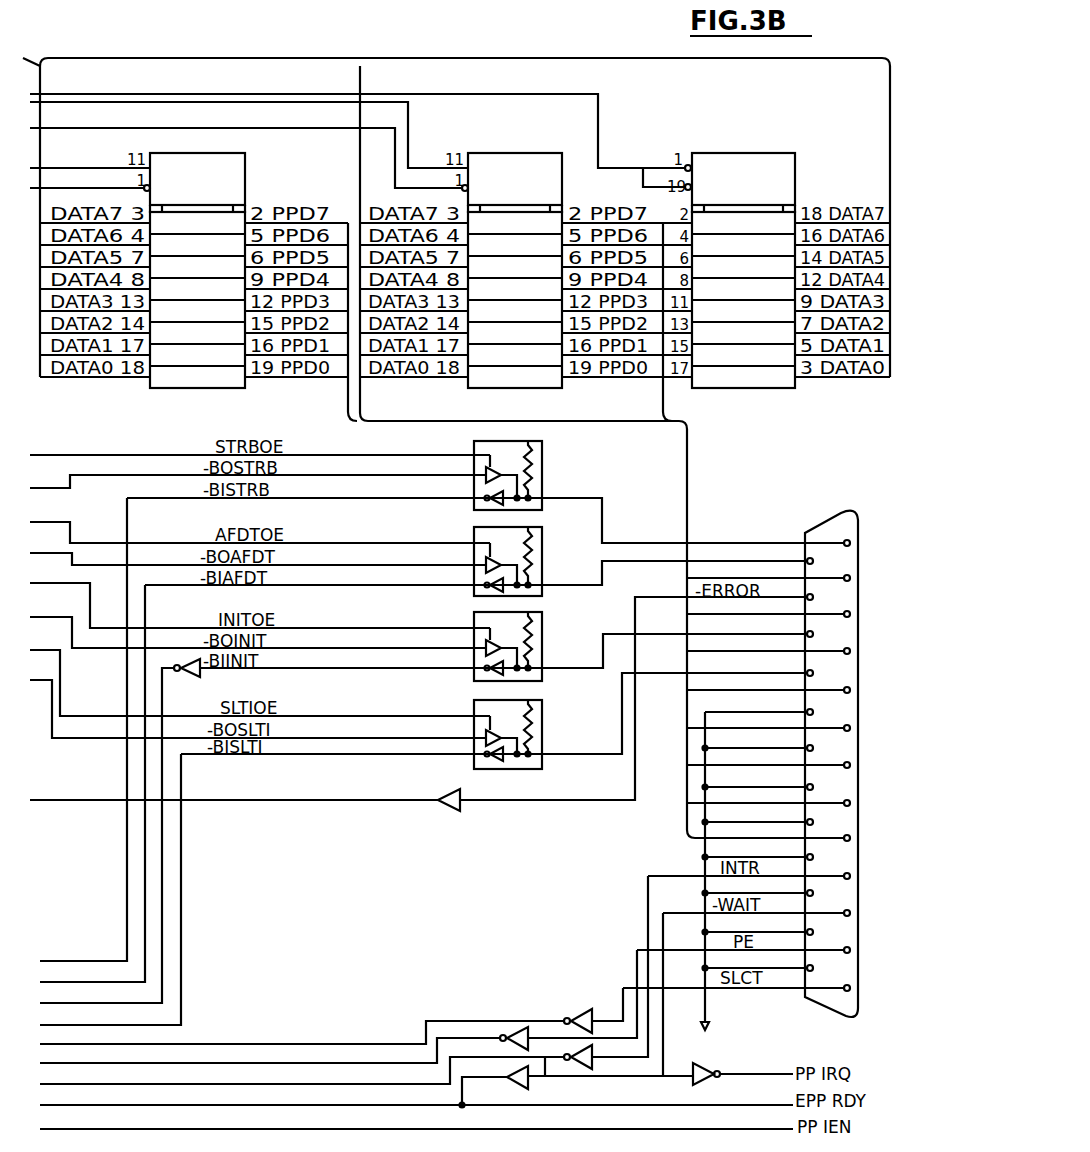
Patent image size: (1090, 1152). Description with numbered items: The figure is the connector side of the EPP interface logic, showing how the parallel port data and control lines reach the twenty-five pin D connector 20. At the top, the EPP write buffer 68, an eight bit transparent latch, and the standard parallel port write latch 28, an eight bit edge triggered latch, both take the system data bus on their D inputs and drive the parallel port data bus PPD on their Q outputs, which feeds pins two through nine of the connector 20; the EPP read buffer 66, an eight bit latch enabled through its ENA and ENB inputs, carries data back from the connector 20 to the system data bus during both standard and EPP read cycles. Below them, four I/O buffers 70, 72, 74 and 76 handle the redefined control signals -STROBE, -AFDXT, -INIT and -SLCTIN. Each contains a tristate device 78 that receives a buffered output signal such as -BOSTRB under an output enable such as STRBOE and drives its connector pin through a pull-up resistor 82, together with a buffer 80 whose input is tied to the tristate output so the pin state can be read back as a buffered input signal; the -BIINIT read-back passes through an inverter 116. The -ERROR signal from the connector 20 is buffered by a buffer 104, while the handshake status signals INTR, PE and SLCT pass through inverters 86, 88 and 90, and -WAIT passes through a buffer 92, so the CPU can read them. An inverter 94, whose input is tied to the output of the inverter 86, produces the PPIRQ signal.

The EPP write buffer 68 is at (220, 166).
The standard parallel port write latch 28 is at (514, 152).
The EPP read buffer 66 is at (775, 168).
The 25 pin D connector 20 is at (821, 527).
The tristate device 78 is at (535, 471).
The I/O buffer 70 is at (528, 458).
The pull-up resistor 82 is at (530, 481).
The buffer 80 is at (486, 503).
The I/O buffer 72 is at (530, 541).
The I/O buffer 74 is at (530, 626).
The I/O buffer 76 is at (532, 712).
The inverter 116 is at (160, 673).
The buffer 104 is at (446, 812).
The inverter 88 is at (515, 1030).
The inverter 90 is at (575, 1008).
The inverter 86 is at (580, 1068).
The buffer 92 is at (519, 1092).
The inverter 94 is at (707, 1068).